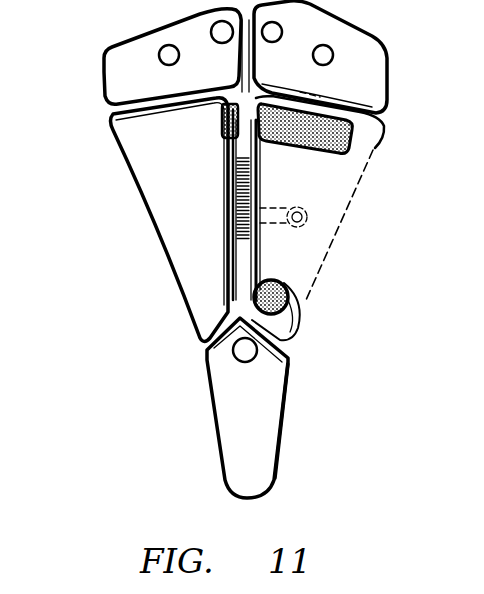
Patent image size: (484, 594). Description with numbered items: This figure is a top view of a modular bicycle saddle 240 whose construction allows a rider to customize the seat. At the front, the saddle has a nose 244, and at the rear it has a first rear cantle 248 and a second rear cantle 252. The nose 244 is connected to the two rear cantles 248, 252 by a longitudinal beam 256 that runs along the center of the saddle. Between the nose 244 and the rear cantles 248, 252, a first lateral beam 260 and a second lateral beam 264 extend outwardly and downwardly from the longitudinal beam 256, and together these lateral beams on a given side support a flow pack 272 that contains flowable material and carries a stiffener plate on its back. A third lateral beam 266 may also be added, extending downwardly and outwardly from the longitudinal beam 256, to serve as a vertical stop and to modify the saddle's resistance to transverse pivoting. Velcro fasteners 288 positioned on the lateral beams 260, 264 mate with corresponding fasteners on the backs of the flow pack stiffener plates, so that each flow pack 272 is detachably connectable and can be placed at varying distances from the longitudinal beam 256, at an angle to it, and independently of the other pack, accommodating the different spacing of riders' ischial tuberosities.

The saddle 240 is at (208, 390).
The nose 244 is at (277, 448).
The first rear cantle 248 is at (386, 50).
The second rear cantle 252 is at (109, 60).
The longitudinal beam 256 is at (238, 166).
The first lateral beam 260 is at (297, 311).
The second lateral beam 264 is at (362, 160).
The third lateral beam 266 is at (310, 226).
The flow pack 272 is at (152, 204).
The velcro fasteners 288 is at (352, 141).